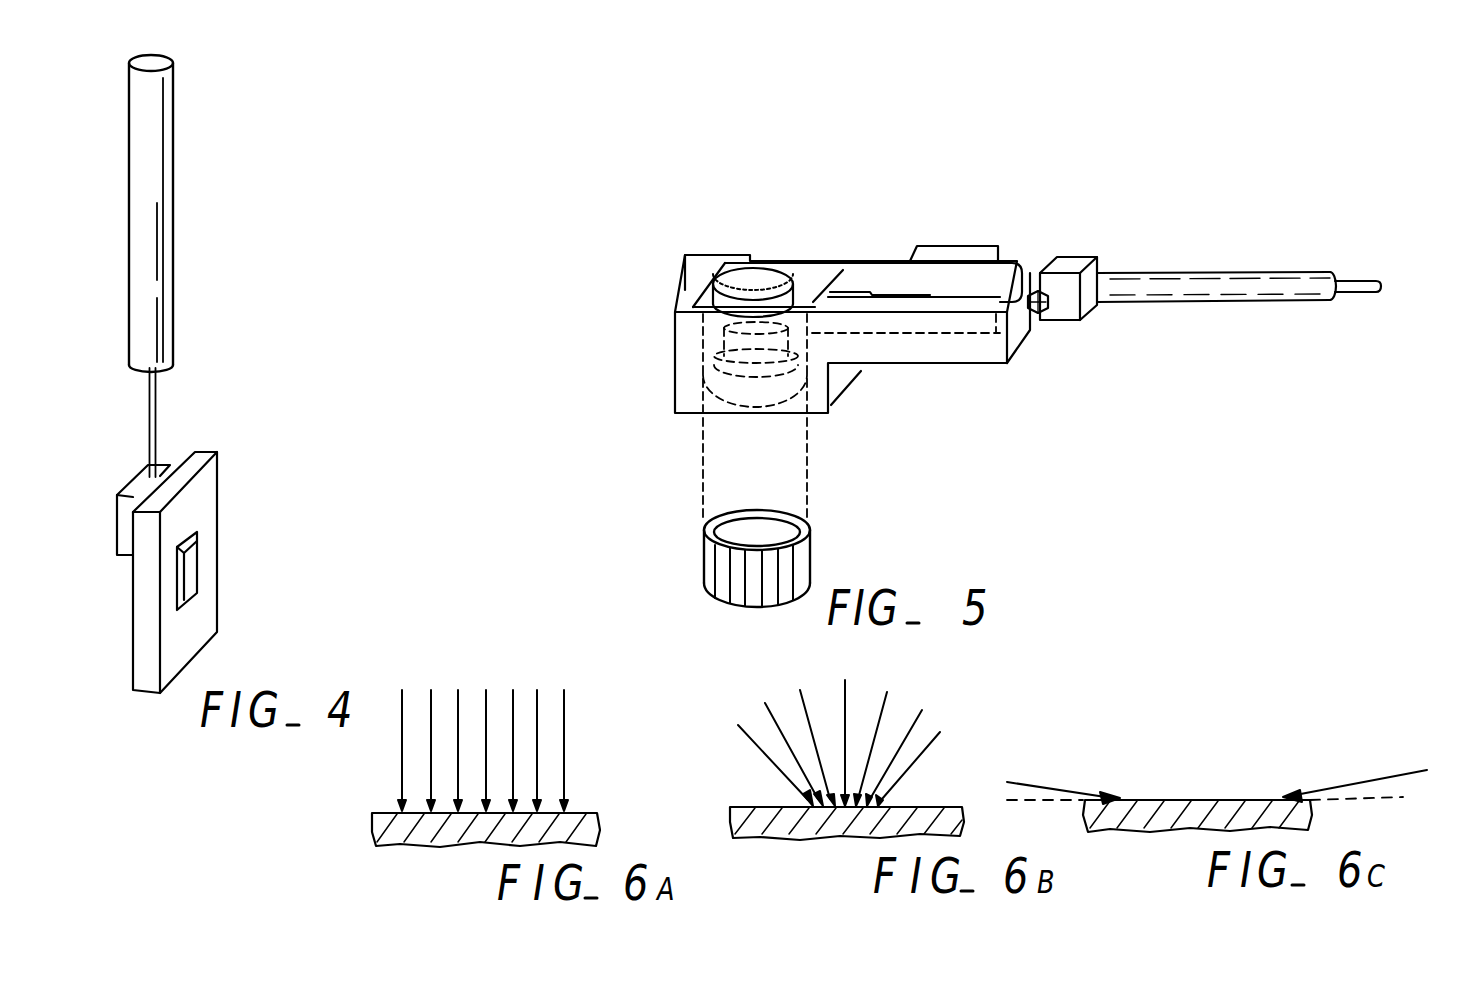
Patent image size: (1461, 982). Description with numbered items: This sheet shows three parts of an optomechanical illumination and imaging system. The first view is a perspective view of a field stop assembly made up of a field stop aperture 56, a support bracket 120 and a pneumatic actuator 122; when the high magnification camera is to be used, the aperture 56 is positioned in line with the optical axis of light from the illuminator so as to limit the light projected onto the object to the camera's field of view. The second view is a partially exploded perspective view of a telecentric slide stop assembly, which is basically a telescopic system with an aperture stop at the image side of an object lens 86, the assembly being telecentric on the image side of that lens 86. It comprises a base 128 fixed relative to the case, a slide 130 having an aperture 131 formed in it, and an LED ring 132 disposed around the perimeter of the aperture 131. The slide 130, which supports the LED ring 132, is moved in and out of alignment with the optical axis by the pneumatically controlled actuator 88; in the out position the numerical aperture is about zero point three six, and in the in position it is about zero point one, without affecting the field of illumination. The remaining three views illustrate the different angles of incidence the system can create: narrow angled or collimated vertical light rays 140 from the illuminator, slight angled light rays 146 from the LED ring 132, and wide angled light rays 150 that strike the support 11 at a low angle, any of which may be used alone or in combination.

In FIG. 6A, the support 11 is at (597, 813).
In FIG. 6B, the support 11 is at (933, 807).
In FIG. 6C, the support 11 is at (1203, 800).
In FIG. 4, the field stop aperture 56 is at (188, 640).
In FIG. 5, the object lens 86 is at (800, 572).
In FIG. 5, the pneumatically controlled actuator 88 is at (1203, 290).
In FIG. 4, the support bracket 120 is at (173, 467).
In FIG. 4, the pneumatic actuator 122 is at (160, 412).
In FIG. 5, the base 128 is at (883, 352).
In FIG. 5, the slide 130 is at (855, 268).
In FIG. 5, the aperture 131 is at (737, 272).
In FIG. 5, the LED ring 132 is at (753, 277).
In FIG. 6A, the collimated vertical light rays 140 is at (567, 723).
In FIG. 6B, the slight angled light rays 146 is at (880, 713).
In FIG. 6C, the wide angled light rays 150 is at (1105, 742).